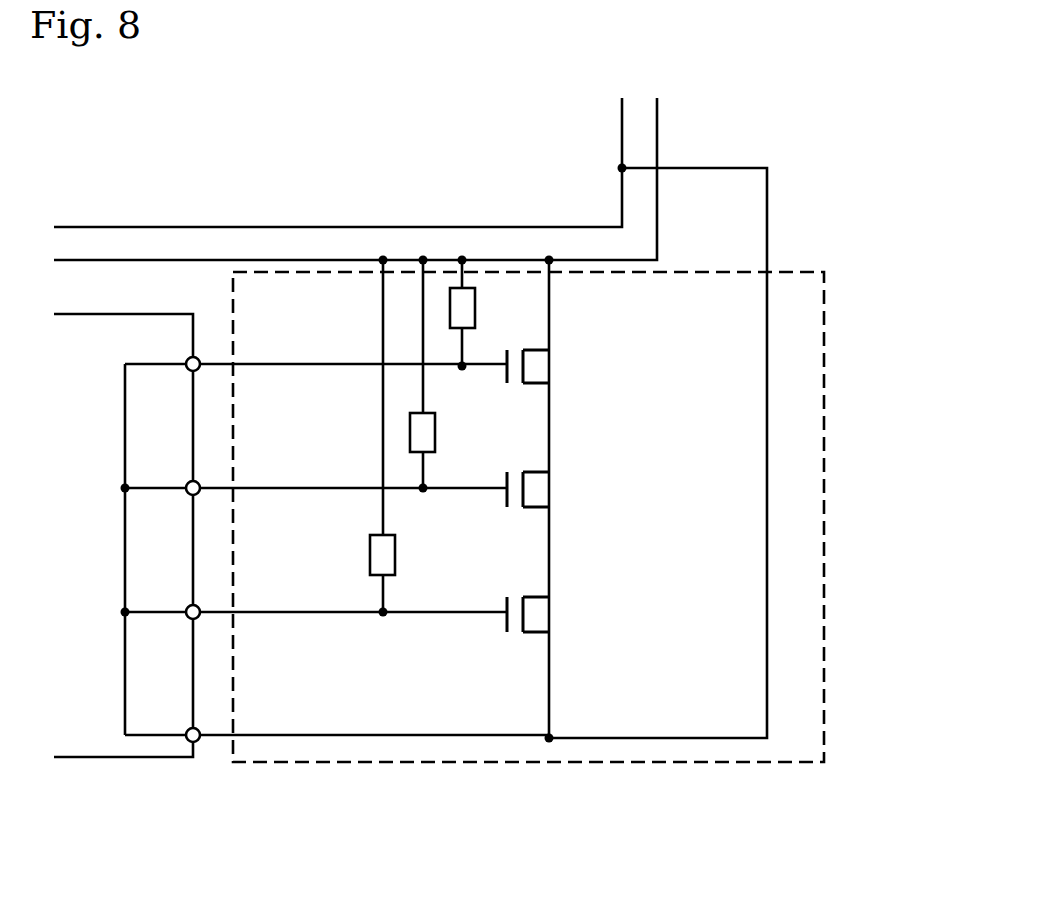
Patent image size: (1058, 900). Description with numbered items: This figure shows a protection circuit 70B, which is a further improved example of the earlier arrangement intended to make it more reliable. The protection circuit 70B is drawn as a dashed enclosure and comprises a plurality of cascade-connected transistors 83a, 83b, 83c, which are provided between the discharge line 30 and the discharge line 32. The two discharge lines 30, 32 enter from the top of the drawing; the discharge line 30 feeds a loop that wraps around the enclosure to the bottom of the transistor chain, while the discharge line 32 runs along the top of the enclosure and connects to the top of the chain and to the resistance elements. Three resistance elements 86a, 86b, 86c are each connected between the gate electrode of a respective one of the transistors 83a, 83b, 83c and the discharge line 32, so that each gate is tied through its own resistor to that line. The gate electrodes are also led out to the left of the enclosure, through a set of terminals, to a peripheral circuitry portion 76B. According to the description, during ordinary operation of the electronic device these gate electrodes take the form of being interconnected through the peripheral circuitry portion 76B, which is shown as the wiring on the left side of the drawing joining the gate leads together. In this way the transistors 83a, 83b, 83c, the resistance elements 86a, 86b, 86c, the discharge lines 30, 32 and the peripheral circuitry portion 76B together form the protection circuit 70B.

The discharge line 30 is at (620, 117).
The discharge line 32 is at (659, 117).
The protection circuit 70B is at (826, 322).
The peripheral circuitry portion 76B is at (120, 757).
The resistance element 86a is at (475, 303).
The resistance element 86b is at (435, 428).
The resistance element 86c is at (395, 553).
The transistor 83a is at (553, 364).
The transistor 83b is at (553, 488).
The transistor 83c is at (553, 612).